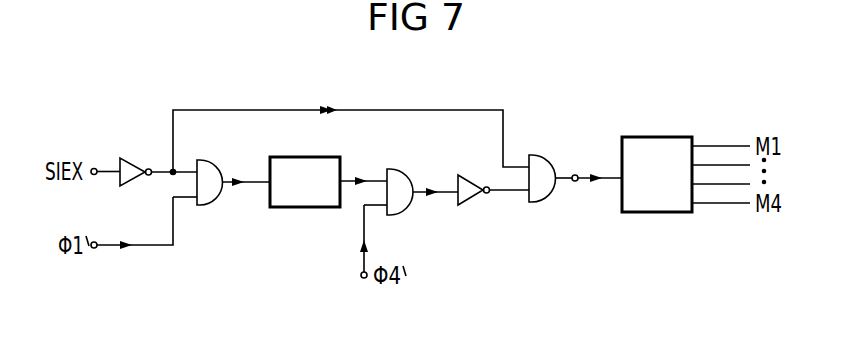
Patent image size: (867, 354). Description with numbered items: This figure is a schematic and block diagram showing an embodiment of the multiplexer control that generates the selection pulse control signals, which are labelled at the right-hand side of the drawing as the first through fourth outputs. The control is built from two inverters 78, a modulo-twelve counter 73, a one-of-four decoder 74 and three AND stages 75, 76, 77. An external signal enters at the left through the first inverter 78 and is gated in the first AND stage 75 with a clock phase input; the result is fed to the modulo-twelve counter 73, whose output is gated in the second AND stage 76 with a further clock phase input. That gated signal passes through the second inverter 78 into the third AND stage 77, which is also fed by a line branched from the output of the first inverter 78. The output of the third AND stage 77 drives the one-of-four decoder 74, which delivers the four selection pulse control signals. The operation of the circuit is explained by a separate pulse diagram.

The modulo-12 counter 73 is at (328, 167).
The one-of-four decoder 74 is at (686, 159).
The AND stage 75 is at (221, 166).
The AND stage 76 is at (411, 176).
The AND stage 77 is at (575, 162).
The inverter 78 is at (323, 166).